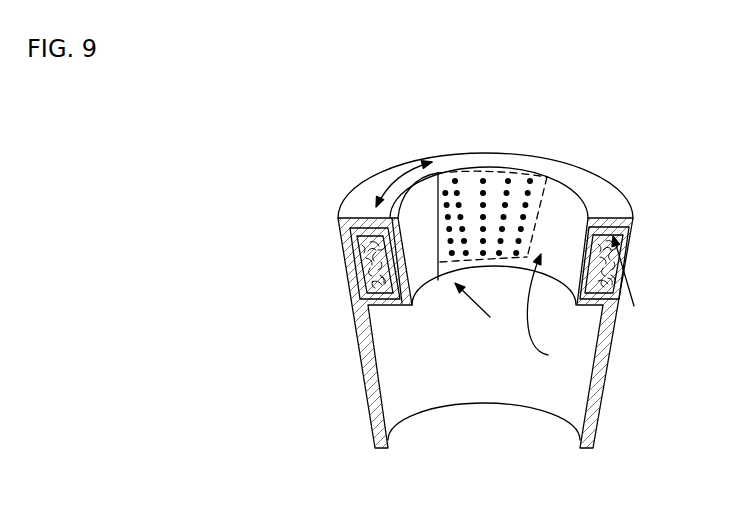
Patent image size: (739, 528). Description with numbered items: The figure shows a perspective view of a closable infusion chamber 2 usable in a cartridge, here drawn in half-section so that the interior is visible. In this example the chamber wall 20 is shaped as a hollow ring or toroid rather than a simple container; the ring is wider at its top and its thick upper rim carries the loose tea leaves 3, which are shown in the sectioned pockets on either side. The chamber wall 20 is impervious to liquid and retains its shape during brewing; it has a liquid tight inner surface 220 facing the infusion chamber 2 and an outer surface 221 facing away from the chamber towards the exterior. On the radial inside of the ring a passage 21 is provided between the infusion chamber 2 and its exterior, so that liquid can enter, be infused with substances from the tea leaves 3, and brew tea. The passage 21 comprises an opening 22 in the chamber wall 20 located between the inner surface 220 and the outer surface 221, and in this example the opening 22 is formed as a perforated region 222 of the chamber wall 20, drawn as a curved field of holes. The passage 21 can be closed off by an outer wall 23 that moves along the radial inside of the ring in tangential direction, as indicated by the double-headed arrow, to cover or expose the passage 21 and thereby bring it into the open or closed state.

The infusion chamber 2 is at (355, 218).
The loose tea leaves 3 is at (360, 283).
The chamber wall 20 is at (590, 213).
The passage 21 is at (490, 307).
The opening 22 is at (527, 196).
The outer wall 23 is at (412, 210).
The inner surface 220 is at (629, 280).
The outer surface 221 is at (561, 312).
The perforated region 222 is at (488, 176).